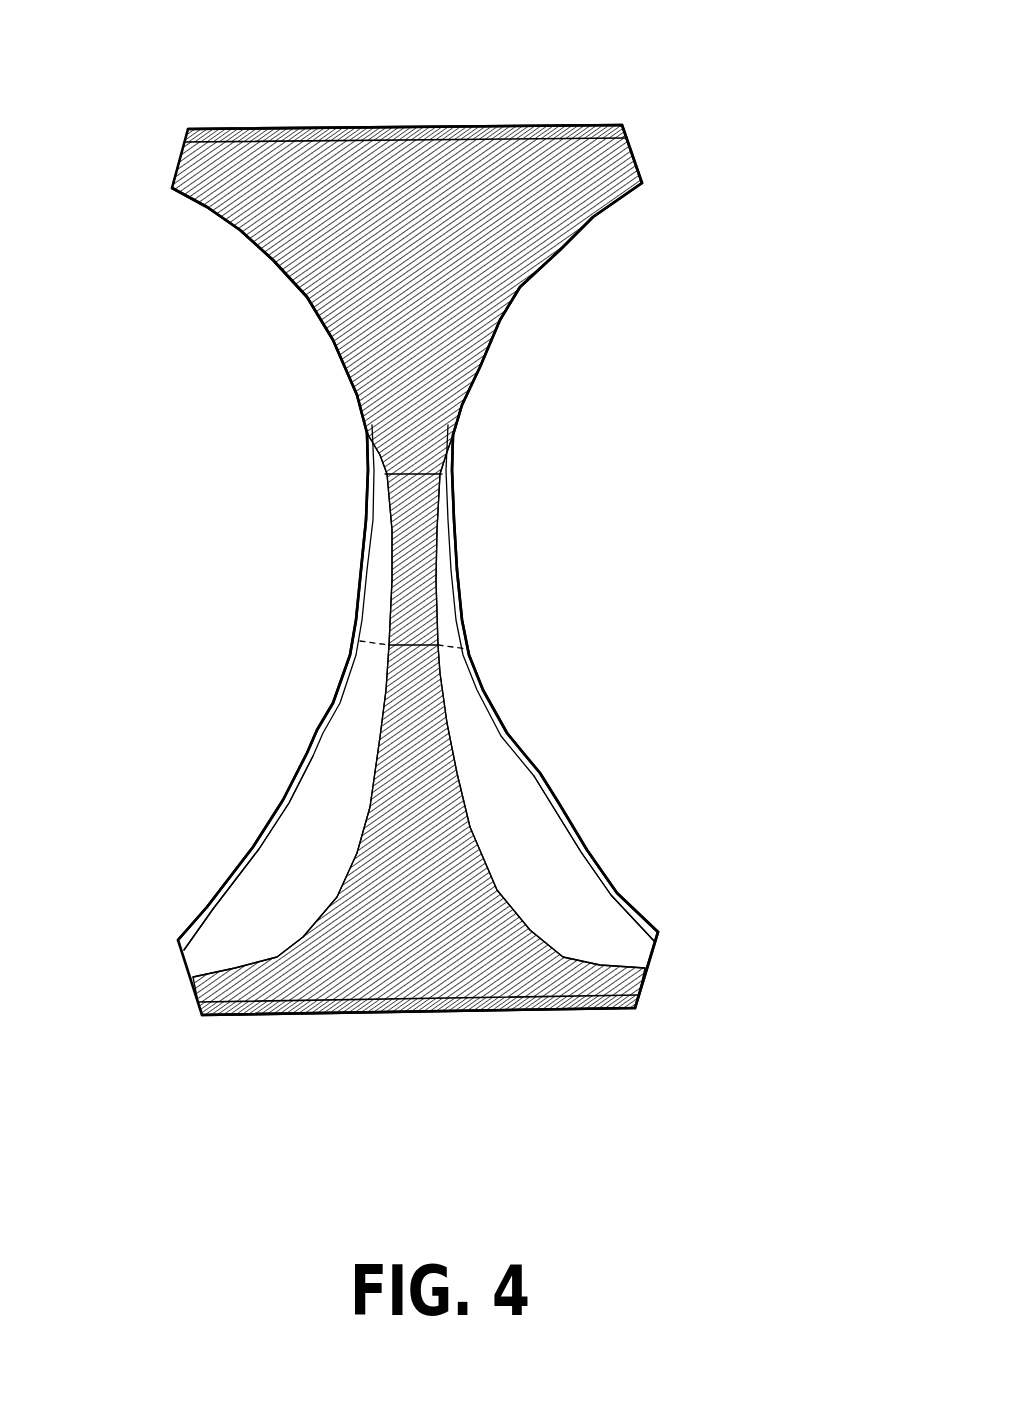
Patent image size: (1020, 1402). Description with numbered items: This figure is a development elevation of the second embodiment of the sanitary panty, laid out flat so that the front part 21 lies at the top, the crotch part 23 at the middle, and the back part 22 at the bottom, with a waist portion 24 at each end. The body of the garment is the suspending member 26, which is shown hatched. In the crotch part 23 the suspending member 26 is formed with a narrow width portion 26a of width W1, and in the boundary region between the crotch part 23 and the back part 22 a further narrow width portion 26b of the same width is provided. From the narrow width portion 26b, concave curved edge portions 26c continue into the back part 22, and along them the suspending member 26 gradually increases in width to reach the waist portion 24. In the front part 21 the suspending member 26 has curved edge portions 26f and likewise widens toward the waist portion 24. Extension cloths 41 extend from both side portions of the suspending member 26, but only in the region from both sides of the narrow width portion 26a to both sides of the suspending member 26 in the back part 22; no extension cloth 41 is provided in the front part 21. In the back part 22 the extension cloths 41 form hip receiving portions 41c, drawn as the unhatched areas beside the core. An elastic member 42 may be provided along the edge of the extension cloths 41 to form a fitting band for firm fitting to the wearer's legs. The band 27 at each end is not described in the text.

The front part 21 is at (643, 152).
The back part 22 is at (687, 911).
The crotch part 23 is at (338, 530).
The waist portion 24 is at (492, 120).
The suspending member 26 is at (517, 227).
The narrow width portion 26a is at (428, 532).
The narrow width portion 26b is at (440, 680).
The concave curved edge portions 26c is at (362, 830).
The curved edge portions 26f is at (334, 348).
The waist end flap 27 is at (343, 130).
The extension cloths 41 is at (304, 714).
The hip receiving portions 41c is at (267, 897).
The elastic member 42 is at (311, 760).